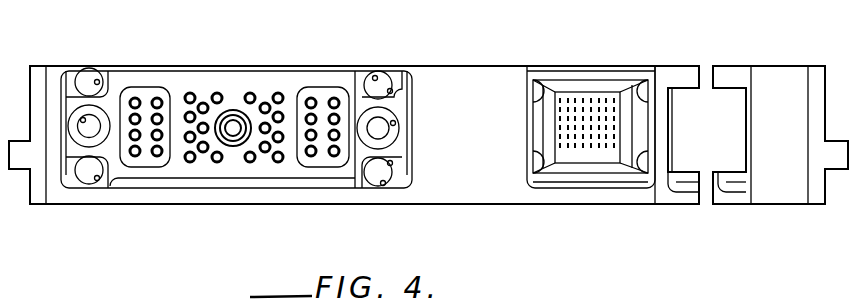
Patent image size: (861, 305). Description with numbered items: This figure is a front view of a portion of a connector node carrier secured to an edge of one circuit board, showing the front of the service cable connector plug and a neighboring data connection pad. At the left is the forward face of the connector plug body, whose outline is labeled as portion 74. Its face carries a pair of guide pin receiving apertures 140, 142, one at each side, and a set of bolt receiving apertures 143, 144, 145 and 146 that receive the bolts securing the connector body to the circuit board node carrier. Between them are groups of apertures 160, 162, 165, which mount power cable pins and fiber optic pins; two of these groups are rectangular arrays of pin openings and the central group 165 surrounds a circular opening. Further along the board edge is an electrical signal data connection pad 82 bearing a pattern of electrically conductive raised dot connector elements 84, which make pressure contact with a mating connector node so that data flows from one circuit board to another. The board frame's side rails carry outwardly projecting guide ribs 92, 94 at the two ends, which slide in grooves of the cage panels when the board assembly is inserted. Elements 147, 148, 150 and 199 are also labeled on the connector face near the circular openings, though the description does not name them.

The multi-pin connector assembly 74 is at (233, 53).
The electrical signal data connection pad 82 is at (577, 92).
The raised dot connector elements 84 is at (602, 103).
The guide rib 92 is at (843, 168).
The guide rib 94 is at (20, 171).
The guide pin receiving aperture 140 is at (82, 118).
The guide pin receiving aperture 142 is at (393, 123).
The bolt receiving aperture 143 is at (98, 80).
The bolt receiving aperture 144 is at (375, 77).
The bolt receiving aperture 145 is at (383, 184).
The bolt receiving aperture 146 is at (90, 174).
The upper left circular socket 147 is at (88, 73).
The contact pin 148 is at (390, 91).
The contact pin 150 is at (97, 180).
The group of apertures 160 is at (156, 165).
The group of apertures 162 is at (318, 165).
The group of apertures 165 is at (217, 160).
The contact pin 199 is at (390, 163).